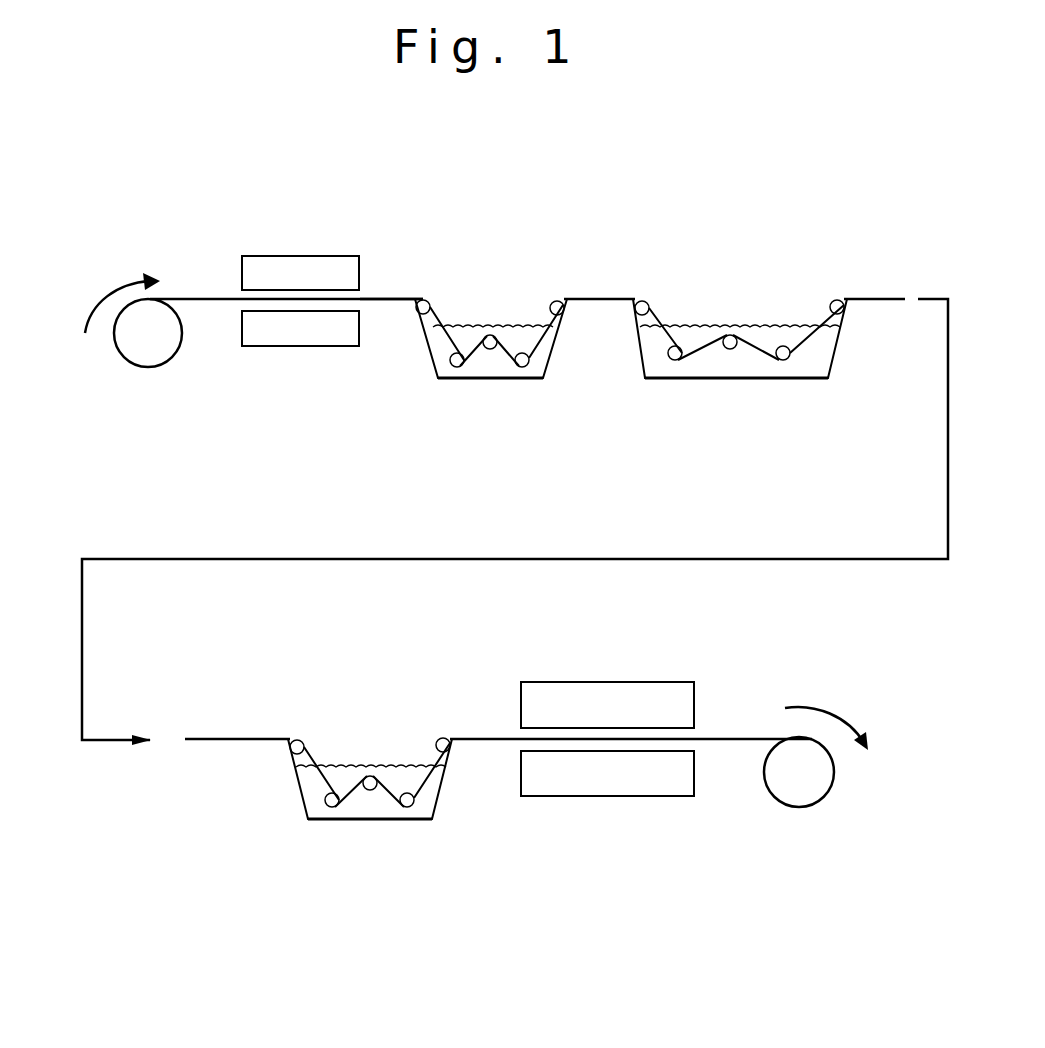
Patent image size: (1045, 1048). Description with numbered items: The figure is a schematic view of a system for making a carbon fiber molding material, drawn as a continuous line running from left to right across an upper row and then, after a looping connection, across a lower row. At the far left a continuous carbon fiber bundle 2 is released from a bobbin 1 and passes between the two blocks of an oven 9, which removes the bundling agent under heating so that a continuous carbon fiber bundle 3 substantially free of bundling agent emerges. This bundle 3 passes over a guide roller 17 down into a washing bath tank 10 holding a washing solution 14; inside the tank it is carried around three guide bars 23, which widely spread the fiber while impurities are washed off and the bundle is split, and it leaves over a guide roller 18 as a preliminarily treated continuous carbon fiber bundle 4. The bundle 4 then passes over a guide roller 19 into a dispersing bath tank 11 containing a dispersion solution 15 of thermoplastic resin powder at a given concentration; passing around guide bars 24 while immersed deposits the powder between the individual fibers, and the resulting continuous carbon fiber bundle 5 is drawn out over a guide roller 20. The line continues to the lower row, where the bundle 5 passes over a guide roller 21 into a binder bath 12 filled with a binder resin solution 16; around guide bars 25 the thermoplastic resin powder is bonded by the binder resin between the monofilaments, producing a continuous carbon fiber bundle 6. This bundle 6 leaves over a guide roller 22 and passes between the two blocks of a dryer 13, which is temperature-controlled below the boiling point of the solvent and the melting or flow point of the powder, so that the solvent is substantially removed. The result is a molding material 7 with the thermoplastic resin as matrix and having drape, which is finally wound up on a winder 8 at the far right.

The bobbin 1 is at (155, 345).
The continuous carbon fiber bundle 2 is at (205, 298).
The continuous carbon fiber bundle 3 is at (392, 297).
The continuous carbon fiber bundle 4 is at (600, 298).
The continuous carbon fiber bundle 5 is at (872, 287).
The continuous carbon fiber bundle 6 is at (490, 737).
The molding material 7 is at (730, 737).
The winder 8 is at (808, 788).
The oven 9 is at (302, 335).
The washing bath tank 10 is at (428, 358).
The dispersing bath tank 11 is at (640, 357).
The binder bath 12 is at (302, 798).
The dryer 13 is at (602, 783).
The washing solution 14 is at (487, 370).
The dispersion solution 15 is at (732, 365).
The binder resin solution 16 is at (370, 808).
The guide roller 17 is at (427, 300).
The guide roller 18 is at (550, 296).
The guide roller 19 is at (642, 296).
The guide roller 20 is at (835, 298).
The guide roller 21 is at (293, 737).
The guide roller 22 is at (442, 733).
The guide bars 23 is at (523, 362).
The guide bars 24 is at (790, 362).
The guide bars 25 is at (407, 825).